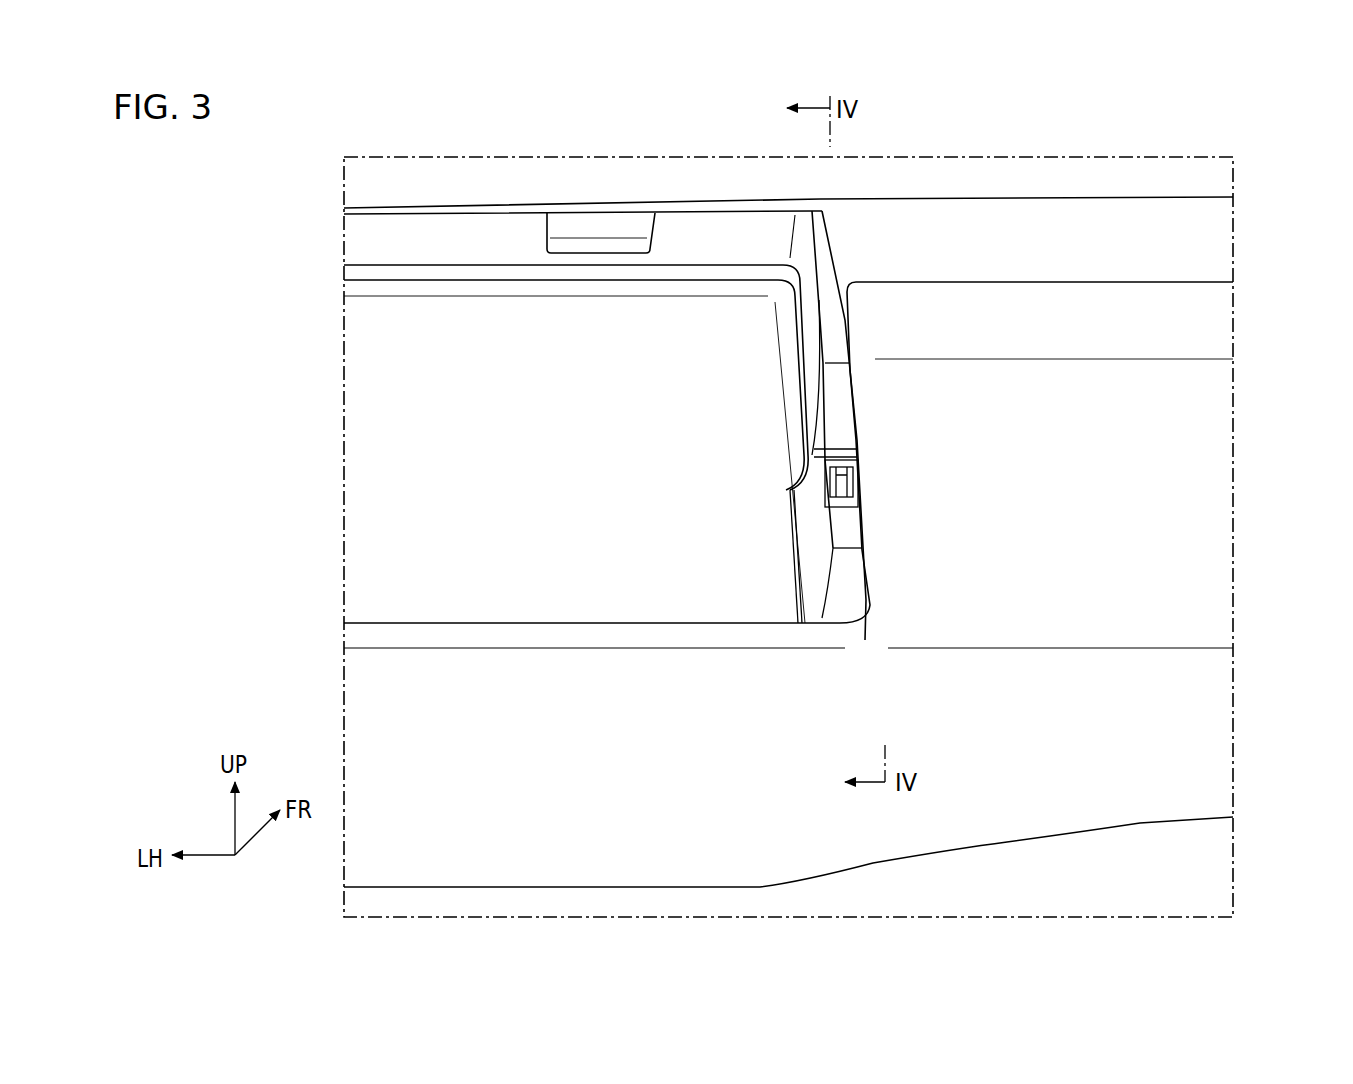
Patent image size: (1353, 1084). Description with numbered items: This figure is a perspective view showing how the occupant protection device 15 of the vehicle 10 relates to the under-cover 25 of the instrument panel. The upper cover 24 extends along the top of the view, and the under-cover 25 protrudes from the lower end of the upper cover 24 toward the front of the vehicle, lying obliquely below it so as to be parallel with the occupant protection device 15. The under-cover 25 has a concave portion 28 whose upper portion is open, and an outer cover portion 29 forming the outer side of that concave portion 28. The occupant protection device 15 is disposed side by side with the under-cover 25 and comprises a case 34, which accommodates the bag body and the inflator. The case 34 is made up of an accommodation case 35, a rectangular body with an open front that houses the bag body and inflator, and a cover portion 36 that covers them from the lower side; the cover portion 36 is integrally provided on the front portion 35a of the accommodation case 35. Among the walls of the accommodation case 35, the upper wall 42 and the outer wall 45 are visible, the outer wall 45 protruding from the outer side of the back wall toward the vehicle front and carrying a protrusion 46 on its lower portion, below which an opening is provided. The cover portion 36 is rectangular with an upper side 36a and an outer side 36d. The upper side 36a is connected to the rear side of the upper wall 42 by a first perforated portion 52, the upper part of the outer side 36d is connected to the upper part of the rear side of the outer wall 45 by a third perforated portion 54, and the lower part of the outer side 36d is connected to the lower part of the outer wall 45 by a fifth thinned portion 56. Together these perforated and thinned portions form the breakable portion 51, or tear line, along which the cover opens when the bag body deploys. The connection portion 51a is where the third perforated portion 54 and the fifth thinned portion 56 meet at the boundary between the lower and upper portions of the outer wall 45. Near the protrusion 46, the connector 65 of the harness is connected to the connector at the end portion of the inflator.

The vehicle 10 is at (318, 188).
The occupant protection device 15 is at (826, 258).
The upper cover 24 is at (1103, 173).
The under-cover 25 is at (469, 833).
The concave portion 28 is at (636, 635).
The outer cover portion 29 is at (1188, 540).
The case 34 is at (292, 226).
The accommodation case 35 is at (438, 222).
The front portion 35a is at (823, 330).
The cover portion 36 is at (457, 383).
The upper side 36a is at (618, 290).
The outer side 36d is at (795, 432).
The upper wall 42 is at (480, 233).
The outer wall 45 is at (813, 512).
The protrusion 46 is at (838, 415).
The breakable portion 51 is at (682, 275).
The connection portion 51a is at (857, 470).
The first perforated portion 52 is at (533, 271).
The third perforated portion 54 is at (820, 353).
The fifth thinned portion 56 is at (800, 583).
The connector 65 is at (862, 520).